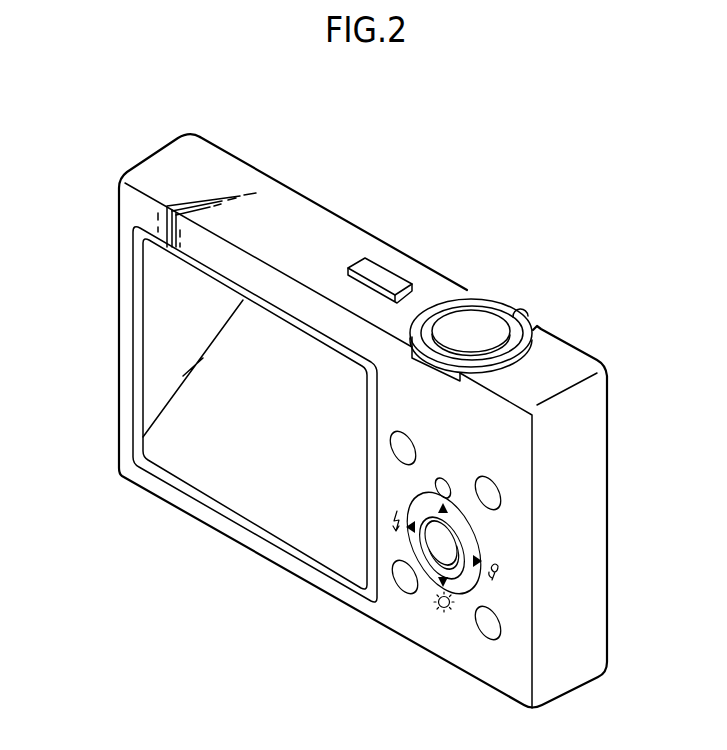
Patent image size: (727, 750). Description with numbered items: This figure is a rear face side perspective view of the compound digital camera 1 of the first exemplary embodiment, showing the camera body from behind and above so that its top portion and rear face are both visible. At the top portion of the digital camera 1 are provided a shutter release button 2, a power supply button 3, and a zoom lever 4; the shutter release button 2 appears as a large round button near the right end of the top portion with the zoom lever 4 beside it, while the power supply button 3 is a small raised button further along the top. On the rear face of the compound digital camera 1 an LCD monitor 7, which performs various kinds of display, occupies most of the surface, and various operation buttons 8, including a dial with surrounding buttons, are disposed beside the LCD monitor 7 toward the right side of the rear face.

The digital camera 1 is at (290, 213).
The shutter release button 2 is at (472, 320).
The power supply button 3 is at (382, 275).
The zoom lever 4 is at (520, 312).
The LCD monitor 7 is at (173, 347).
The operation buttons 8 is at (384, 547).